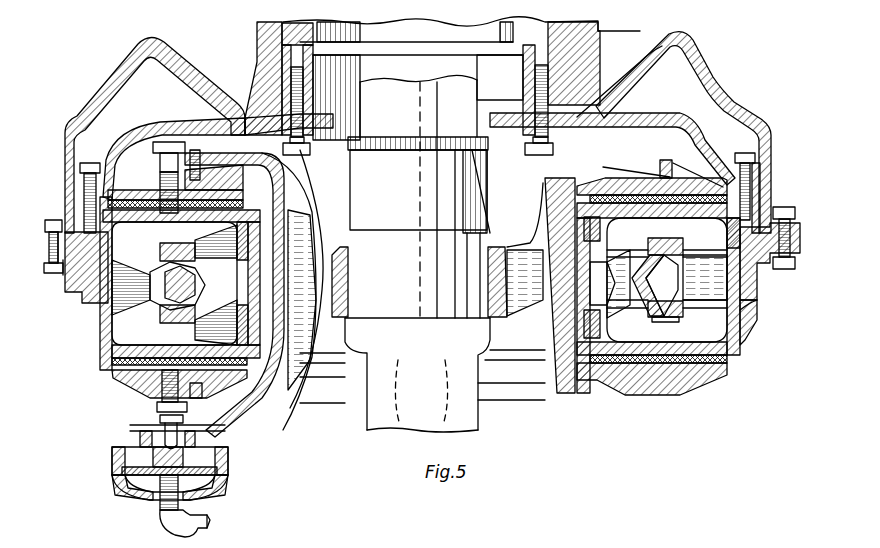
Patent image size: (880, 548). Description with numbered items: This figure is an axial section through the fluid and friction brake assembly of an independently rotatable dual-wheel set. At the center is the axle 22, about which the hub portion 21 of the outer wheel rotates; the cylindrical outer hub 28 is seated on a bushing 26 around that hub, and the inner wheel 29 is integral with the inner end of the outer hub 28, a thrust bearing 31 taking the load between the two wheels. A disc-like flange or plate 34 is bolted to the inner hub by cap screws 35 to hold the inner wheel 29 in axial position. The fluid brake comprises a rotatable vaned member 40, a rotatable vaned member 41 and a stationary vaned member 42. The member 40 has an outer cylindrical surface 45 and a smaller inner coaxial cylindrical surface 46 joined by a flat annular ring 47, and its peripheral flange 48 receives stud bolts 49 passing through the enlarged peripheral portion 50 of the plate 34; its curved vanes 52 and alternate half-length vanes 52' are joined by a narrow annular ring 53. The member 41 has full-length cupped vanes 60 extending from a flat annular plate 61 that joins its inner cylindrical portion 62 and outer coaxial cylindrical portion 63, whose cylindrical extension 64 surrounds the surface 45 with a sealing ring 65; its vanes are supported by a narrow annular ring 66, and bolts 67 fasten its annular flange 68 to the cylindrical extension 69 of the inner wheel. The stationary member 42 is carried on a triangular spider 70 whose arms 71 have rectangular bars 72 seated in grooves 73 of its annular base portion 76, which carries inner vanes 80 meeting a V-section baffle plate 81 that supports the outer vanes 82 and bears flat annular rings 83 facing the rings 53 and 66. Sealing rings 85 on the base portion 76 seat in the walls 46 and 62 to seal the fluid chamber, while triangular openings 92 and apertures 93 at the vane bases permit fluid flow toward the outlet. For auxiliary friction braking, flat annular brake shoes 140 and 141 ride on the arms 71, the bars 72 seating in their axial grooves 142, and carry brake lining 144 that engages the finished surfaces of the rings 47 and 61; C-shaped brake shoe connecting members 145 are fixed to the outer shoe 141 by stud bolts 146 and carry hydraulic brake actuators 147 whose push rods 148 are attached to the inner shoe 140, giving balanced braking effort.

The hub portion 21 is at (545, 24).
The axle 22 is at (430, 98).
The bushing 26 is at (560, 42).
The cylindrical outer hub 28 is at (560, 58).
The inner wheel 29 is at (150, 40).
The thrust bearing 31 is at (612, 94).
The flange or plate 34 is at (640, 126).
The cap screws 35 is at (290, 92).
The rotatable vaned member 40 is at (120, 238).
The rotatable vaned member 41 is at (125, 335).
The stationary vaned member 42 is at (130, 308).
The outer cylindrical surface 45 is at (735, 240).
The inner coaxial cylindrical surface 46 is at (605, 225).
The flat annular ring 47 is at (688, 200).
The peripheral flange 48 is at (760, 208).
The stud bolts 49 is at (757, 158).
The enlarged peripheral portion 50 is at (762, 172).
The curved vanes 52 is at (646, 173).
The half-length vanes 52' is at (691, 173).
The narrow annular ring 53 is at (648, 200).
The full-length cupped vanes 60 is at (710, 325).
The flat annular plate 61 is at (740, 346).
The inner cylindrical portion 62 is at (625, 380).
The outer coaxial cylindrical portion 63 is at (745, 312).
The cylindrical extension 64 is at (757, 265).
The sealing ring 65 is at (757, 300).
The narrow annular ring 66 is at (688, 365).
The bolts 67 is at (60, 270).
The annular flange 68 is at (70, 275).
The cylindrical extension 69 is at (48, 240).
The triangular spider 70 is at (497, 262).
The arms 71 is at (540, 345).
The rectangular bars 72 is at (545, 330).
The grooves 73 is at (545, 372).
The annular base portion 76 is at (560, 290).
The inner vanes 80 is at (215, 272).
The baffle plate 81 is at (640, 285).
The outer vanes 82 is at (685, 268).
The flat annular rings 83 is at (648, 262).
The sealing rings 85 is at (590, 215).
The triangular openings 92 is at (238, 292).
The apertures 93 is at (155, 285).
The brake shoe 140 is at (118, 382).
The brake shoe 141 is at (130, 198).
The axial grooves 142 is at (575, 165).
The brake lining 144 is at (142, 196).
The brake shoe connecting members 145 is at (260, 398).
The stud bolts 146 is at (166, 142).
The hydraulic brake actuators 147 is at (112, 462).
The push rods 148 is at (130, 430).